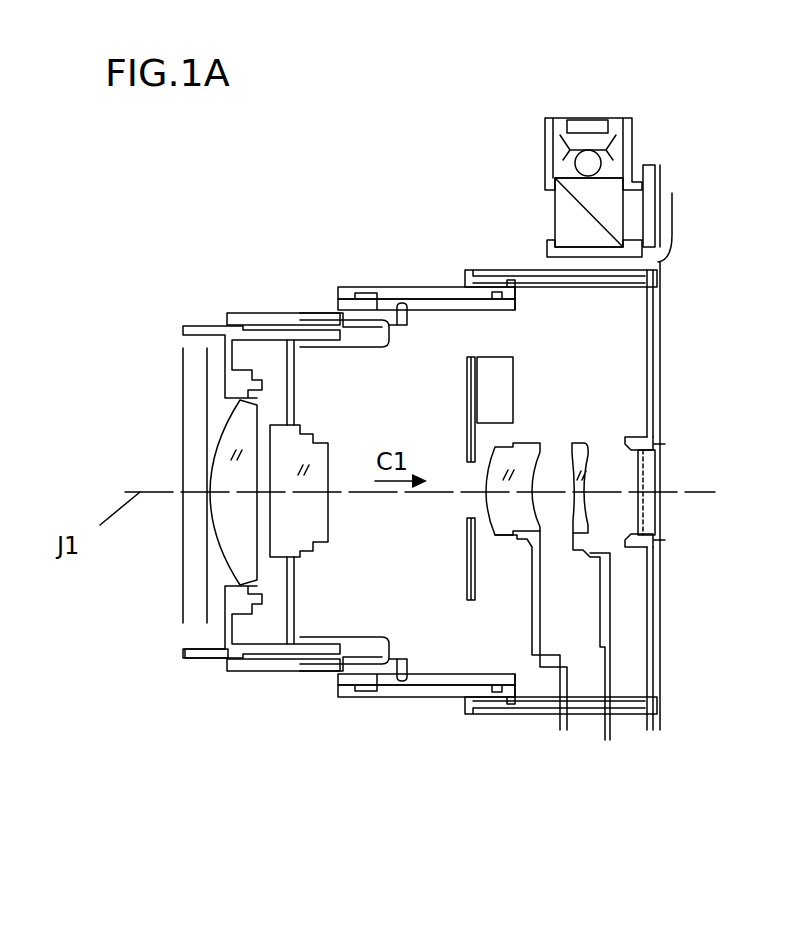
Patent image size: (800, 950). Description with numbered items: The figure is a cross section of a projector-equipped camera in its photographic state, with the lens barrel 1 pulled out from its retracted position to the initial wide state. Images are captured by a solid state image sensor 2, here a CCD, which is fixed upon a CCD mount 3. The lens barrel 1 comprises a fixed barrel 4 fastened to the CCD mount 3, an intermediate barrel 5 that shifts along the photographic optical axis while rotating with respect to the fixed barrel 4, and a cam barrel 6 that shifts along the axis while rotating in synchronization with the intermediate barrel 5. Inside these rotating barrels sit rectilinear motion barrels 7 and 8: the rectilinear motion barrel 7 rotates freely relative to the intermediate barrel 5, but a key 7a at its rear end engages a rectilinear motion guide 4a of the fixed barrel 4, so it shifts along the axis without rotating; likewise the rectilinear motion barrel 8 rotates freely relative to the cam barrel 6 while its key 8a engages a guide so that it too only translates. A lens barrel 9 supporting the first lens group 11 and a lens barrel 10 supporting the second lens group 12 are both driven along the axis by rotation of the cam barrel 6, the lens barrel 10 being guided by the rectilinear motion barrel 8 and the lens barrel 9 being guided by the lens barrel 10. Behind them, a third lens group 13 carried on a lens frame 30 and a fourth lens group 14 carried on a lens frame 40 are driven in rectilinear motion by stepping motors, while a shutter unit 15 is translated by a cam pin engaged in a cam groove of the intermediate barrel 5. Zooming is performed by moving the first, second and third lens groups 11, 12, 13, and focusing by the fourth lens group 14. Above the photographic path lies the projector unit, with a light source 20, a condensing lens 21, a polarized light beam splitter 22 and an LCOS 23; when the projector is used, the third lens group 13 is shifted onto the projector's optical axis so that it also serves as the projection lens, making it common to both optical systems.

The lens barrel 1 is at (283, 249).
The solid state image sensor 2 is at (658, 478).
The CCD mount 3 is at (652, 376).
The fixed barrel 4 is at (492, 270).
The rectilinear motion guide 4a is at (596, 288).
The intermediate barrel 5 is at (420, 289).
The cam barrel 6 is at (250, 312).
The rectilinear motion barrel 7 is at (444, 310).
The key 7a is at (515, 299).
The rectilinear motion barrel 8 is at (352, 346).
The key 8a is at (406, 322).
The lens barrel 9 is at (204, 660).
The lens barrel 10 is at (300, 600).
The first lens group 11 is at (237, 537).
The second lens group 12 is at (282, 453).
The third lens group 13 is at (497, 505).
The fourth lens group 14 is at (586, 458).
The shutter unit 15 is at (503, 380).
The light source 20 is at (594, 122).
The condensing lens 21 is at (567, 155).
The polarized light beam splitter 22 is at (565, 212).
The LCOS 23 is at (650, 192).
The lens frame 30 is at (532, 622).
The lens frame 40 is at (607, 590).